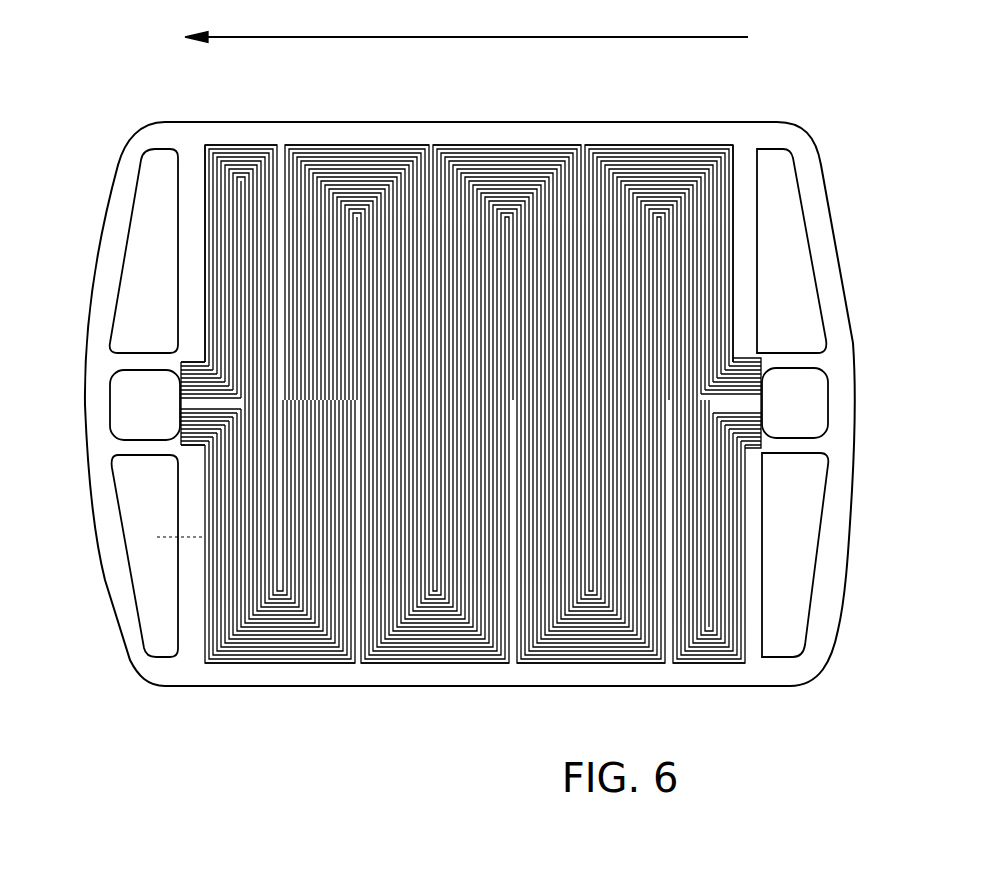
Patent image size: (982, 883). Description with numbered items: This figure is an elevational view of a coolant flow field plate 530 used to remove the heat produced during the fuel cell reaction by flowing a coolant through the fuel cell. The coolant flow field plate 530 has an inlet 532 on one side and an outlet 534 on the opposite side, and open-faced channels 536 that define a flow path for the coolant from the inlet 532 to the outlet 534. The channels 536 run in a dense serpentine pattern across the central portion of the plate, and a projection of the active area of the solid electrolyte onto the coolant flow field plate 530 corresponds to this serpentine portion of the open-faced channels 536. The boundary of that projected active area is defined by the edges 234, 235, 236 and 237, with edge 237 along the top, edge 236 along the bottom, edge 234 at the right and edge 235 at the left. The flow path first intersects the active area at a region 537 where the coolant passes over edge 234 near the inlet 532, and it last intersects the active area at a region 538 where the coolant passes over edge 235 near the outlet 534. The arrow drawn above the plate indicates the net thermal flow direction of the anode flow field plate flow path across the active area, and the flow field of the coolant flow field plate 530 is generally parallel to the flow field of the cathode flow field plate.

The coolant flow field plate 530 is at (262, 722).
The inlet 532 is at (778, 398).
The outlet 534 is at (127, 418).
The open-faced channels 536 is at (518, 160).
The region of the flow path 537 is at (762, 420).
The region of the flow path 538 is at (180, 385).
The edge 234 is at (733, 177).
The edge 235 is at (207, 222).
The edge 236 is at (410, 665).
The edge 237 is at (343, 147).